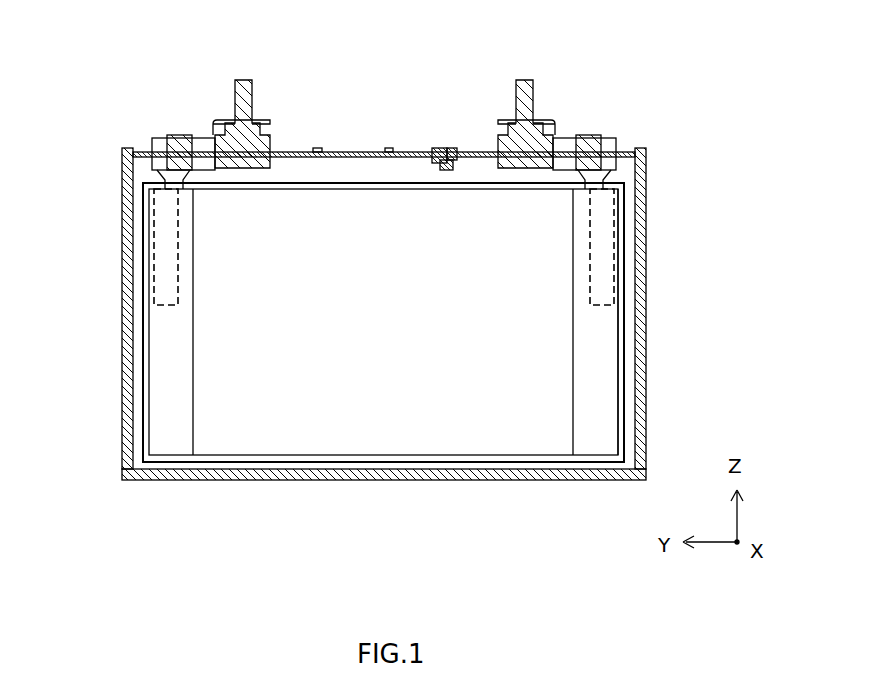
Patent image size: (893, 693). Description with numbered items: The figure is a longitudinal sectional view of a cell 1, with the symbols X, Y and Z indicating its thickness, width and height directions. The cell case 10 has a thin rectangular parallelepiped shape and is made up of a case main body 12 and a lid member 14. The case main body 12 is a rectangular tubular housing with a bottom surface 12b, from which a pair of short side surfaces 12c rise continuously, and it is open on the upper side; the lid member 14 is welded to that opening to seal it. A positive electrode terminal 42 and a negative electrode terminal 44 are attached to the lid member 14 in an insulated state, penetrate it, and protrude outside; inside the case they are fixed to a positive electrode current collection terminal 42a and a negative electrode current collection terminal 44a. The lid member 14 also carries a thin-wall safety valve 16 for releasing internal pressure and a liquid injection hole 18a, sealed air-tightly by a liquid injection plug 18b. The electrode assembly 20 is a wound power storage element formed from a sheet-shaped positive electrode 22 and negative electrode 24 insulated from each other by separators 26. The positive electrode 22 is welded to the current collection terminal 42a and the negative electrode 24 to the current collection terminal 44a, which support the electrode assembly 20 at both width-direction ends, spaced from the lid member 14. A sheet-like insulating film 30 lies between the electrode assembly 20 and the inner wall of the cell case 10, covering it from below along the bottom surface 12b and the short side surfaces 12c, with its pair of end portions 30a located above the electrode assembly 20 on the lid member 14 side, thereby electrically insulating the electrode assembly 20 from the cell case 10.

The cell 1 is at (636, 89).
The cell case 10 is at (723, 128).
The case main body 12 is at (646, 172).
The bottom surface 12b is at (162, 480).
The short side surface 12c is at (122, 443).
The lid member 14 is at (646, 149).
The safety valve 16 is at (353, 153).
The liquid injection hole 18a is at (443, 152).
The liquid injection plug 18b is at (453, 152).
The electrode assembly 20 is at (443, 415).
The positive electrode 22 is at (162, 375).
The negative electrode 24 is at (610, 375).
The separator 26 is at (573, 333).
The insulating film 30 is at (143, 203).
The end portion 30a is at (295, 183).
The positive electrode terminal 42 is at (235, 90).
The positive electrode current collection terminal 42a is at (155, 280).
The negative electrode terminal 44 is at (518, 92).
The negative electrode current collection terminal 44a is at (603, 278).